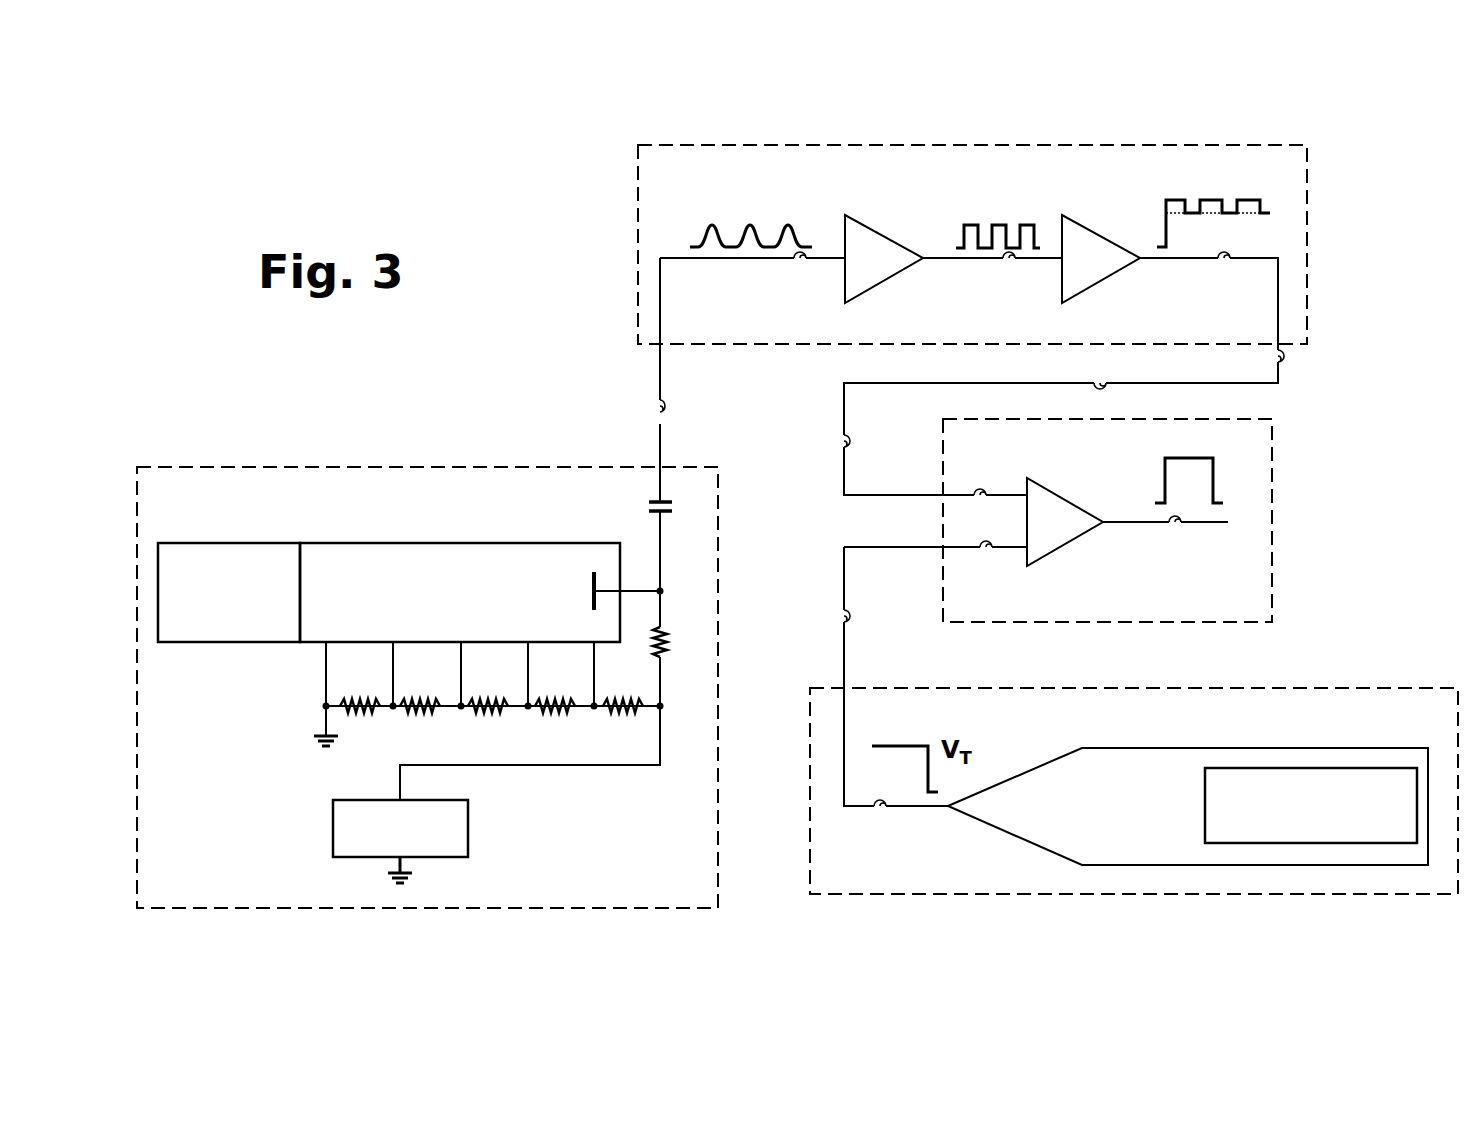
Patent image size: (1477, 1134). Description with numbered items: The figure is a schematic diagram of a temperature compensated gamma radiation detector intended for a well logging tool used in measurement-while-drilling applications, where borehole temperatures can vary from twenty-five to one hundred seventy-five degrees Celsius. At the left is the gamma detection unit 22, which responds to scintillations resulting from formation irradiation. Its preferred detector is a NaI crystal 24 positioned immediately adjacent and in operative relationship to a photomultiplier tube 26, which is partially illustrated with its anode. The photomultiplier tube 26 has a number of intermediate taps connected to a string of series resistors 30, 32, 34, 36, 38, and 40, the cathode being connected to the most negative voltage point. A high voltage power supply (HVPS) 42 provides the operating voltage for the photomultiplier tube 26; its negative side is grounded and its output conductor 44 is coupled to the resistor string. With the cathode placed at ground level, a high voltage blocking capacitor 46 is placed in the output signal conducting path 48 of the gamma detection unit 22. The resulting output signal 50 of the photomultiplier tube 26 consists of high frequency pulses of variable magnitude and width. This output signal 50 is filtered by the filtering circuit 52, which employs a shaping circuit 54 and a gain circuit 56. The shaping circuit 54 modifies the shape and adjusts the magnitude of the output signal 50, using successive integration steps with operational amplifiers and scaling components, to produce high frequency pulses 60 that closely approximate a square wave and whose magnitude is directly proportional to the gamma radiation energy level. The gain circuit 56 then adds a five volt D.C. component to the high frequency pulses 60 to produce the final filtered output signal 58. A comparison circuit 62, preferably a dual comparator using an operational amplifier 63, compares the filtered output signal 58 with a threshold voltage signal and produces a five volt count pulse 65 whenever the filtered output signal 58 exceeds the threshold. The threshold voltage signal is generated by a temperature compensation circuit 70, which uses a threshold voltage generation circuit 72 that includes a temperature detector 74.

The gamma detection unit 22 is at (404, 467).
The NaI crystal 24 is at (262, 543).
The photomultiplier tube 26 is at (448, 543).
The series resistor 30 is at (358, 700).
The series resistor 32 is at (426, 700).
The series resistor 34 is at (492, 700).
The series resistor 36 is at (560, 698).
The series resistor 38 is at (620, 698).
The series resistor 40 is at (666, 642).
The high voltage power supply 42 is at (468, 829).
The output conductor 44 is at (520, 765).
The high voltage blocking capacitor 46 is at (670, 512).
The output signal conducting path 48 is at (660, 480).
The output signal 50 is at (760, 225).
The filtering circuit 52 is at (638, 226).
The shaping circuit 54 is at (876, 292).
The gain circuit 56 is at (1094, 292).
The filtered output signal 58 is at (1166, 202).
The high frequency pulses 60 is at (1010, 223).
The comparison circuit 62 is at (1272, 550).
The operational amplifier 63 is at (1058, 556).
The count pulse 65 is at (1213, 463).
The temperature compensation circuit 70 is at (1306, 688).
The threshold voltage generation circuit 72 is at (1210, 748).
The temperature detector 74 is at (1315, 768).